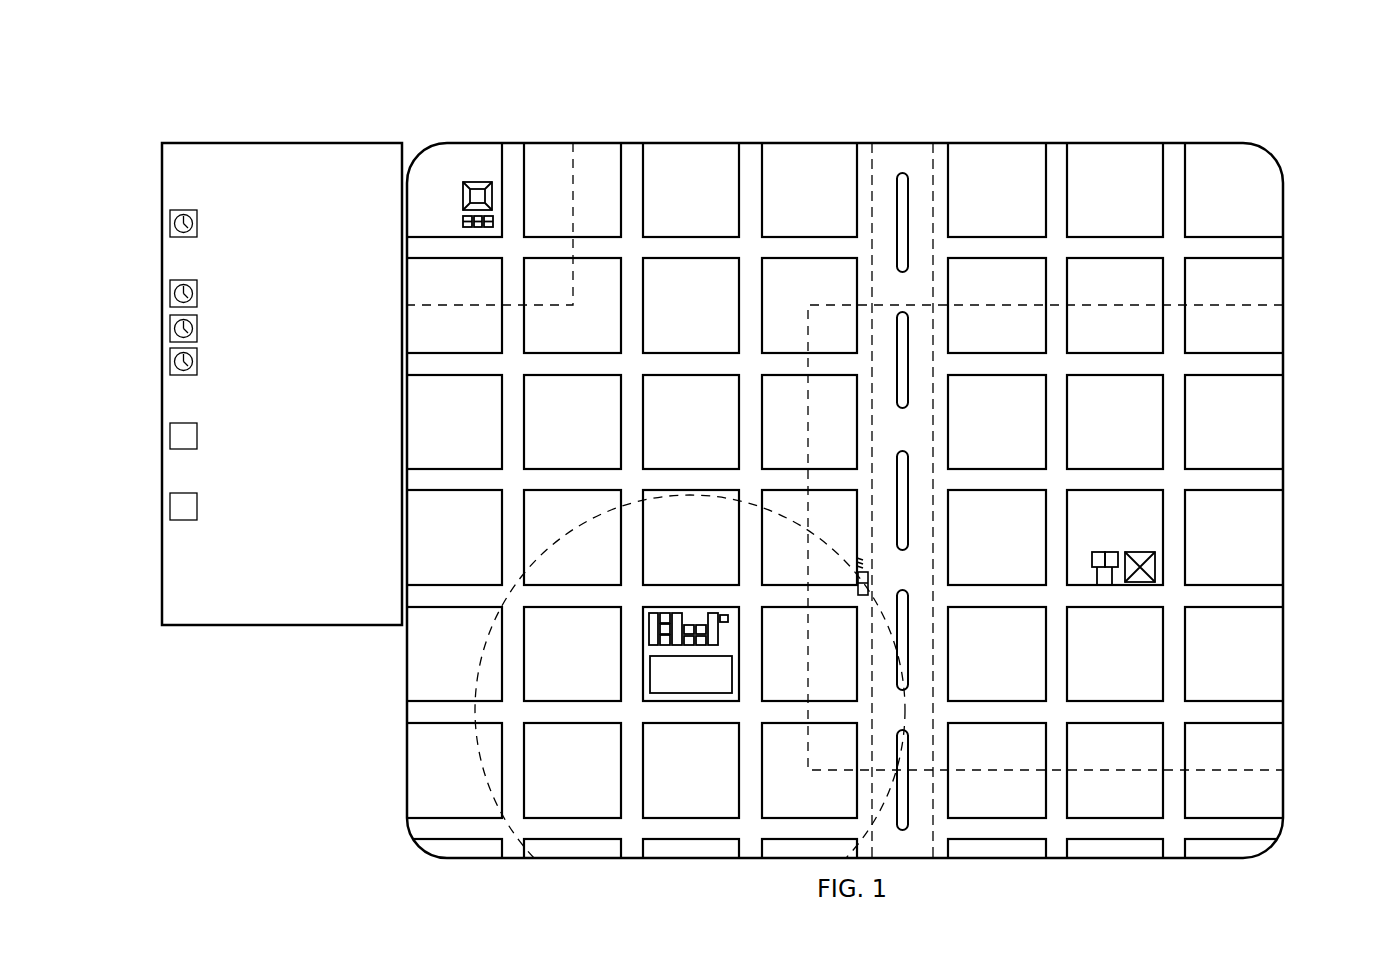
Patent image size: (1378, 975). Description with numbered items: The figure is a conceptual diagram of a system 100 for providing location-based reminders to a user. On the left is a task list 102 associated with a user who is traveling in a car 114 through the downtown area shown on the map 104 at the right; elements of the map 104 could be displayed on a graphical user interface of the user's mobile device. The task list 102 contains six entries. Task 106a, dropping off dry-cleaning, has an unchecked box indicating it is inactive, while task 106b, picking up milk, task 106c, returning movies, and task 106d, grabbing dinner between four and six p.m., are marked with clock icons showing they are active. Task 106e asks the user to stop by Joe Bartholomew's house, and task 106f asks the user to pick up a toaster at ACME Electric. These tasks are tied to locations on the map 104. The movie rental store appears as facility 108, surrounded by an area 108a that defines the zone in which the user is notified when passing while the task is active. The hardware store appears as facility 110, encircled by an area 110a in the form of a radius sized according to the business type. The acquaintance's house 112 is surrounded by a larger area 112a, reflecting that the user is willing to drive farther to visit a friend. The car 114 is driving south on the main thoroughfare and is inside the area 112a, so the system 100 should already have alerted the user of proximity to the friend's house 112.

The system 100 is at (198, 88).
The task list 102 is at (228, 143).
The map 104 is at (598, 152).
The task 106a is at (303, 223).
The task 106b is at (210, 278).
The task 106c is at (345, 313).
The task 106d is at (338, 363).
The task 106e is at (210, 422).
The task 106f is at (325, 540).
The facility 108 is at (478, 182).
The area 108a is at (570, 168).
The facility 110 is at (690, 653).
The area 110a is at (478, 742).
The acquaintance's house 112 is at (1140, 552).
The area 112a is at (1250, 770).
The car 114 is at (870, 575).